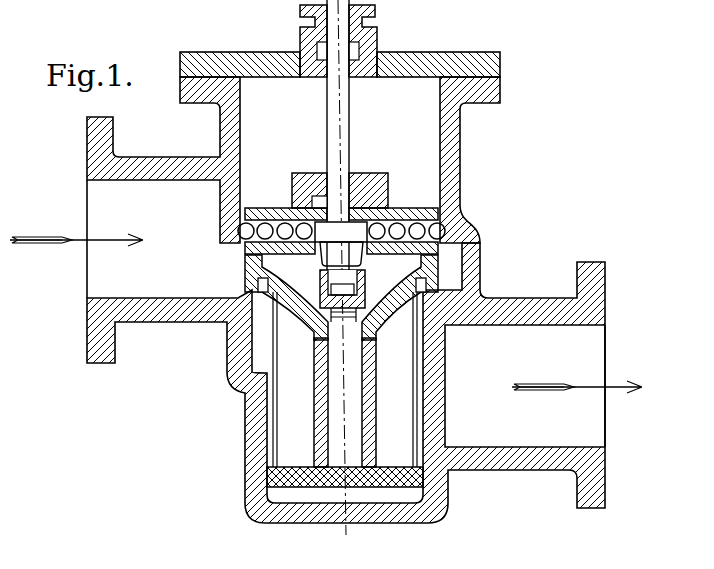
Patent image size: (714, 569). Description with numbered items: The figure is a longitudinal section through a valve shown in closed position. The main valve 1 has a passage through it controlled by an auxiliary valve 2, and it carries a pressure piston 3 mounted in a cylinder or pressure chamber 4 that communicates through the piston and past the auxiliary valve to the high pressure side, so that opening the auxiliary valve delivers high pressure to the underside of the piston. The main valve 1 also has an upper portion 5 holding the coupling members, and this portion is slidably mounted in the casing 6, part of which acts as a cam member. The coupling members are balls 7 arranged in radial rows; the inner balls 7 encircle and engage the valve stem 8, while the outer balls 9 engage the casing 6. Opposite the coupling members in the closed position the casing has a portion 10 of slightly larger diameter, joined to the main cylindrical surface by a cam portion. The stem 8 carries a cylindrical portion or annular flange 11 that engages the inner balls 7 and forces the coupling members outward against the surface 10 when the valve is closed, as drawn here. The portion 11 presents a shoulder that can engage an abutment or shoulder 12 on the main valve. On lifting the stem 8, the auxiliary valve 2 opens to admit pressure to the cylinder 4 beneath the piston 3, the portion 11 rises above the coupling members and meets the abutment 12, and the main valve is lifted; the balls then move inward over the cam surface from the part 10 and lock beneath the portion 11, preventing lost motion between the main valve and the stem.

The main valve 1 is at (254, 275).
The auxiliary valve 2 is at (360, 298).
The pressure piston 3 is at (366, 394).
The cylinder or pressure chamber 4 is at (345, 486).
The upper portion of the main valve 5 is at (378, 193).
The casing 6 is at (233, 152).
The balls 7 is at (341, 231).
The valve stem 8 is at (343, 142).
The outer balls 9 is at (341, 231).
The casing portion or surface 10 is at (502, 238).
The cylindrical portion or annular flange 11 is at (341, 244).
The abutment or shoulder 12 is at (327, 193).